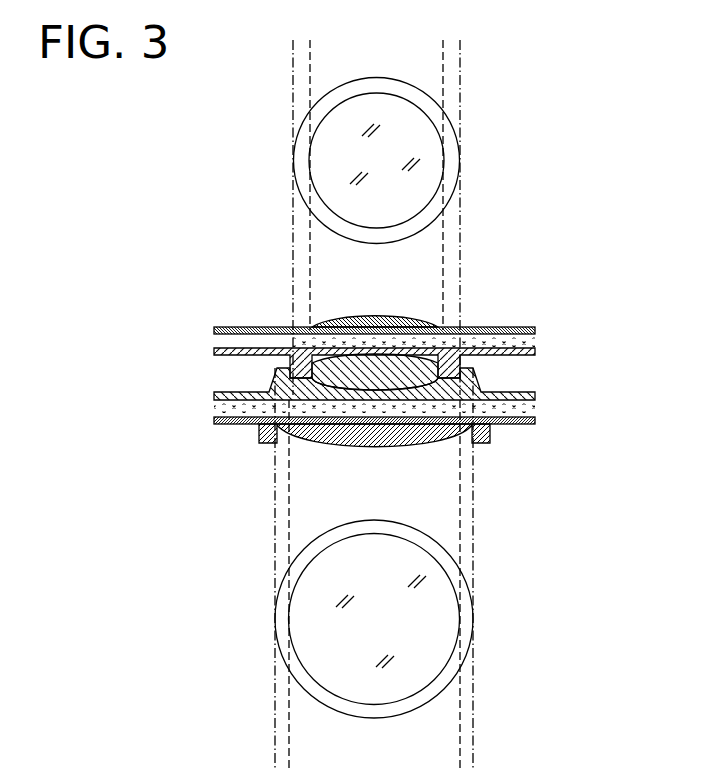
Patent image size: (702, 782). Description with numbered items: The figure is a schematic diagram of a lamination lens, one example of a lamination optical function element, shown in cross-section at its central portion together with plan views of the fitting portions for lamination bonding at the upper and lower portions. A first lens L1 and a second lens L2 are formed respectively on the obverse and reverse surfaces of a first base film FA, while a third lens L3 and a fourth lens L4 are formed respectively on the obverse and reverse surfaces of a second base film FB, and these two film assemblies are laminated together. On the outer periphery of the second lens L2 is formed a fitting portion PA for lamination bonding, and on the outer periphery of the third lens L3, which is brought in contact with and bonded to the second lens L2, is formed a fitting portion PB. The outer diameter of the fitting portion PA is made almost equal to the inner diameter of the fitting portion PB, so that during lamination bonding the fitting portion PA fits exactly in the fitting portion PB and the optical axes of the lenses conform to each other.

The fitting portion PA is at (462, 330).
The fitting portion PB is at (468, 608).
The first base film FA is at (533, 347).
The second base film FB is at (535, 410).
The first lens L1 is at (398, 315).
The second lens L2 is at (373, 348).
The third lens L3 is at (329, 398).
The fourth lens L4 is at (374, 448).